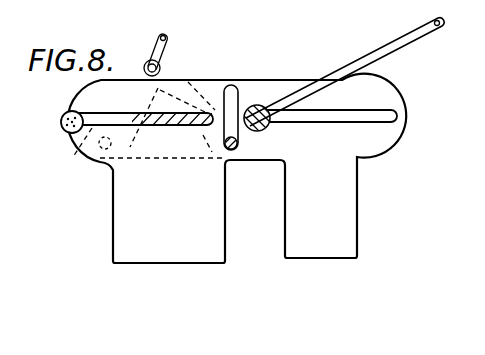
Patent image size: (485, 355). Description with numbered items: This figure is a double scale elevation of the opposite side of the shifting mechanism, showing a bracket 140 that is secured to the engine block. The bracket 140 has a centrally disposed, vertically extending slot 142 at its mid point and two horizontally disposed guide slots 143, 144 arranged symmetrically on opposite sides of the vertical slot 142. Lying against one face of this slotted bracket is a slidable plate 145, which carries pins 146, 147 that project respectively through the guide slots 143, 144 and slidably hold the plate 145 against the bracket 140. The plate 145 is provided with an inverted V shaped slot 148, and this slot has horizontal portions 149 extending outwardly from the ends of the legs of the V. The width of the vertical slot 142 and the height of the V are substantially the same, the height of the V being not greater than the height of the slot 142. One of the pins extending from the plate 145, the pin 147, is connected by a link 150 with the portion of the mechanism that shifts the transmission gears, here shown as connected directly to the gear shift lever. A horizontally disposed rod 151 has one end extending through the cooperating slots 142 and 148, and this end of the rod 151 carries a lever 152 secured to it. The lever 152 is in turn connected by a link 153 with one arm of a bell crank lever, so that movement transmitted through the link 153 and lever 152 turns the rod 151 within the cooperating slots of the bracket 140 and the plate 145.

The bracket 140 is at (343, 150).
The vertically extending slot 142 is at (240, 92).
The guide slot 143 is at (100, 122).
The guide slot 144 is at (378, 108).
The slidable plate 145 is at (63, 159).
The pin 146 is at (65, 130).
The pin 147 is at (271, 128).
The inverted V shaped slot 148 is at (146, 124).
The horizontal portions 149 is at (110, 152).
The link 150 is at (384, 44).
The horizontally disposed rod 151 is at (234, 160).
The lever 152 is at (162, 71).
The link 153 is at (172, 47).